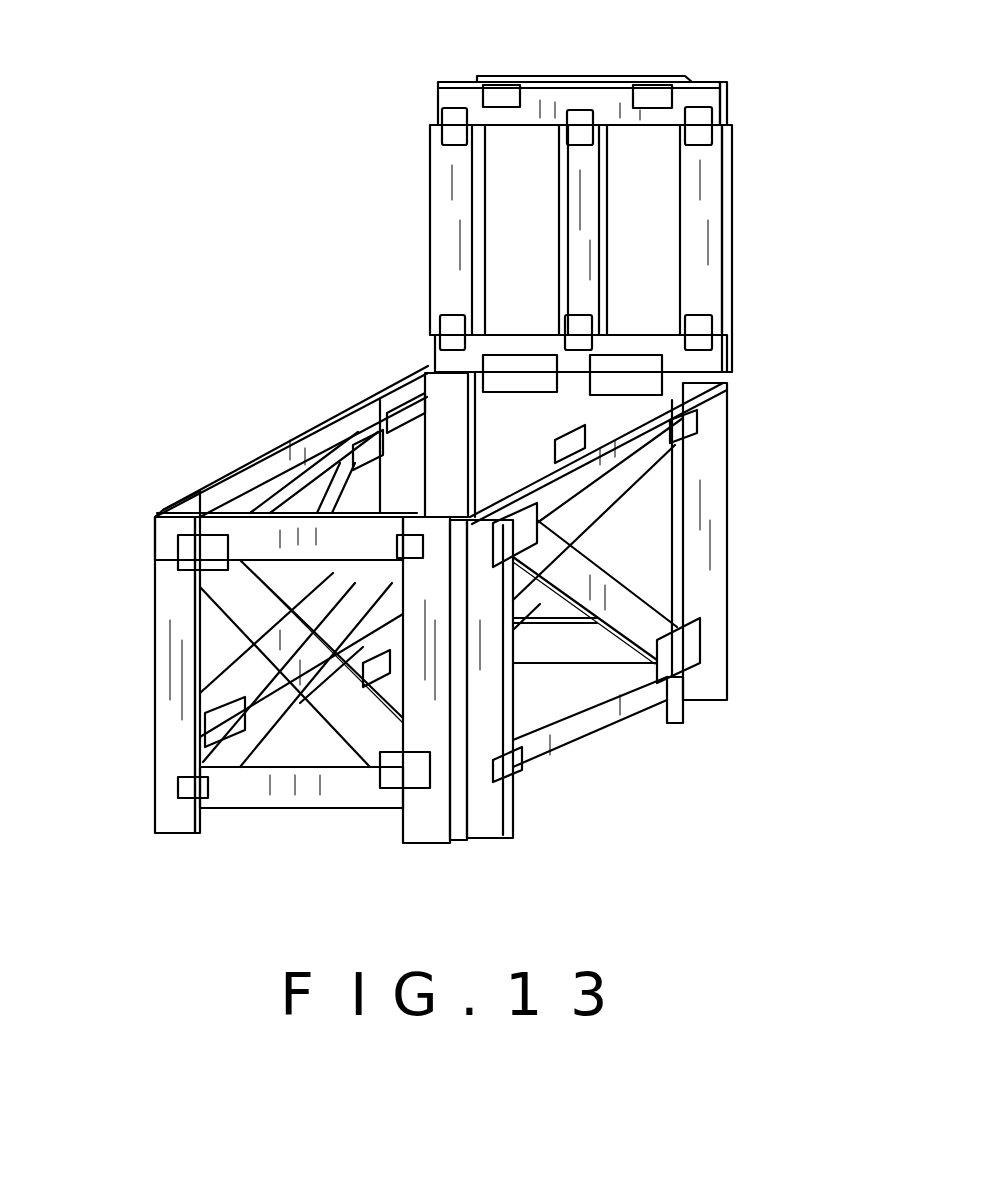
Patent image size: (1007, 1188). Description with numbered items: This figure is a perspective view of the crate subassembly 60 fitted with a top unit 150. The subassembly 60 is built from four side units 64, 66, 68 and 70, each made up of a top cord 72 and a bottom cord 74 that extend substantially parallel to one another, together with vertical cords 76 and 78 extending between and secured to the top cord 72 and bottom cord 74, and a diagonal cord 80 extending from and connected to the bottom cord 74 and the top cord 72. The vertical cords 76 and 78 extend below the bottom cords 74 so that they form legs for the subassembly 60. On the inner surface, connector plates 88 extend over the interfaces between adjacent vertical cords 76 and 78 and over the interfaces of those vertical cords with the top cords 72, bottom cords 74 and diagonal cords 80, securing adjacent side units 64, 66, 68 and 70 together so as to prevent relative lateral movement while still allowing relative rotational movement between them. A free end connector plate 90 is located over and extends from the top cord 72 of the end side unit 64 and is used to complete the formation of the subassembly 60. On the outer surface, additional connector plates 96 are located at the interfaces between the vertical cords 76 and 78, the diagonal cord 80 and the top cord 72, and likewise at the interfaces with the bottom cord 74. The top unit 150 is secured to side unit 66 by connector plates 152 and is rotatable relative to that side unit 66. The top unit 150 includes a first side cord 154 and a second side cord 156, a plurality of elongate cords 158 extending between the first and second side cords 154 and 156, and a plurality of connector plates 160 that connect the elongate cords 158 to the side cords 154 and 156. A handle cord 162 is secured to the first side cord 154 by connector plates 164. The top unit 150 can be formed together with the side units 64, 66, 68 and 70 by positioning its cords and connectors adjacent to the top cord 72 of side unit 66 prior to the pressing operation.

The crate subassembly 60 is at (479, 616).
The side unit 64 is at (252, 455).
The side unit 66 is at (545, 665).
The side unit 68 is at (542, 475).
The side unit 70 is at (283, 820).
The top cord 72 is at (285, 455).
The bottom cord 74 is at (210, 750).
The vertical cord 76 is at (410, 395).
The vertical cord 78 is at (198, 505).
The diagonal cord 80 is at (242, 600).
The connector plate 88 is at (376, 428).
The free end connector plate 90 is at (332, 418).
The connector plate 96 is at (182, 552).
The top unit 150 is at (626, 200).
The connector plate 152 is at (512, 355).
The first side cord 154 is at (540, 105).
The second side cord 156 is at (737, 376).
The elongate cord 158 is at (450, 218).
The connector plate 160 is at (582, 118).
The handle cord 162 is at (628, 80).
The connector plate 164 is at (505, 95).